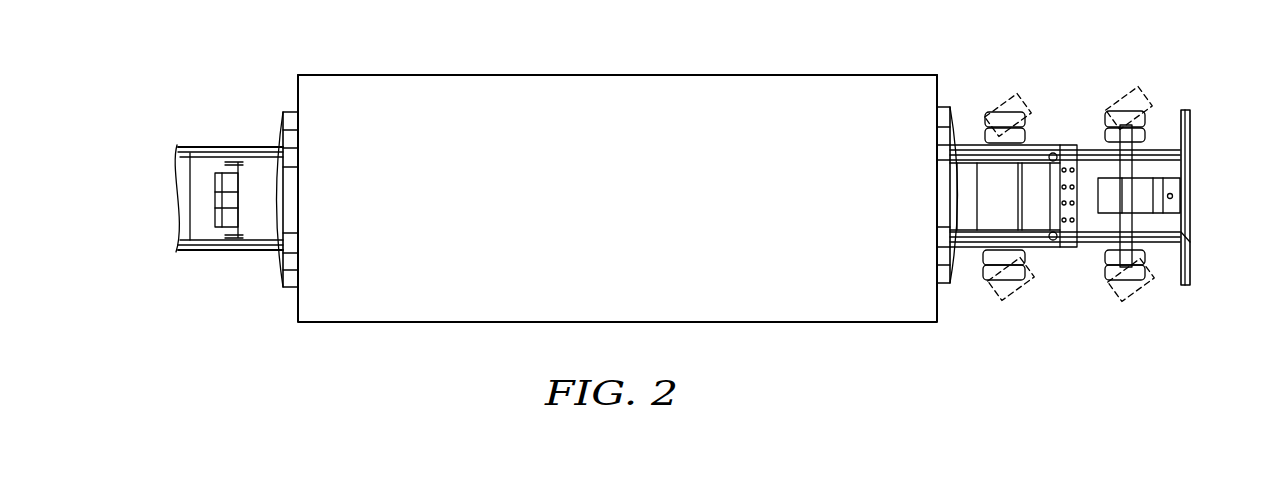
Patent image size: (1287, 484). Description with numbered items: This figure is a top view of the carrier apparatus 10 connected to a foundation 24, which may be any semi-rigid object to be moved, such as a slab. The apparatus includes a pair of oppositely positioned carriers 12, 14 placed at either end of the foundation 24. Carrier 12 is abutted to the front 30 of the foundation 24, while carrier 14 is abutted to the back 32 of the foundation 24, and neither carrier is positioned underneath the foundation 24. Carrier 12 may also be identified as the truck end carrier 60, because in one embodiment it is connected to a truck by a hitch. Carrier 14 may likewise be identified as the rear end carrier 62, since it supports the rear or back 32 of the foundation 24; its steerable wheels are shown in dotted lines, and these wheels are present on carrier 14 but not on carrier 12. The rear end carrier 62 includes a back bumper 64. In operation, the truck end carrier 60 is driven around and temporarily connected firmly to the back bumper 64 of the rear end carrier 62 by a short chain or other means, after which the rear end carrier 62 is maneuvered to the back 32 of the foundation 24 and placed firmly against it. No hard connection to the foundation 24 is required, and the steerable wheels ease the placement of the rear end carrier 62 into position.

The carrier apparatus 10 is at (522, 51).
The carrier 12 is at (222, 148).
The carrier 14 is at (1192, 143).
The foundation 24 is at (631, 209).
The front 30 is at (303, 142).
The back 32 is at (870, 83).
The truck end carrier 60 is at (213, 93).
The rear end carrier 62 is at (1150, 76).
The back bumper 64 is at (1192, 240).